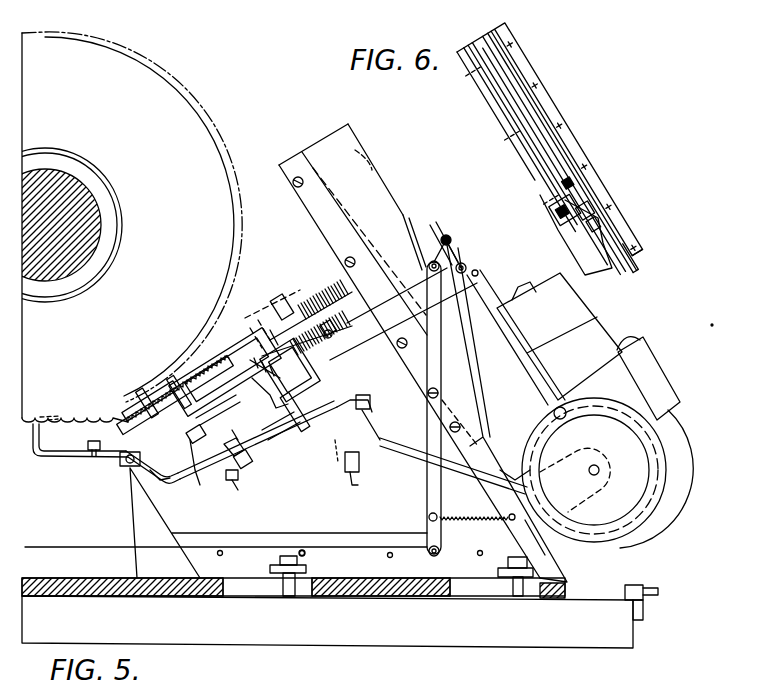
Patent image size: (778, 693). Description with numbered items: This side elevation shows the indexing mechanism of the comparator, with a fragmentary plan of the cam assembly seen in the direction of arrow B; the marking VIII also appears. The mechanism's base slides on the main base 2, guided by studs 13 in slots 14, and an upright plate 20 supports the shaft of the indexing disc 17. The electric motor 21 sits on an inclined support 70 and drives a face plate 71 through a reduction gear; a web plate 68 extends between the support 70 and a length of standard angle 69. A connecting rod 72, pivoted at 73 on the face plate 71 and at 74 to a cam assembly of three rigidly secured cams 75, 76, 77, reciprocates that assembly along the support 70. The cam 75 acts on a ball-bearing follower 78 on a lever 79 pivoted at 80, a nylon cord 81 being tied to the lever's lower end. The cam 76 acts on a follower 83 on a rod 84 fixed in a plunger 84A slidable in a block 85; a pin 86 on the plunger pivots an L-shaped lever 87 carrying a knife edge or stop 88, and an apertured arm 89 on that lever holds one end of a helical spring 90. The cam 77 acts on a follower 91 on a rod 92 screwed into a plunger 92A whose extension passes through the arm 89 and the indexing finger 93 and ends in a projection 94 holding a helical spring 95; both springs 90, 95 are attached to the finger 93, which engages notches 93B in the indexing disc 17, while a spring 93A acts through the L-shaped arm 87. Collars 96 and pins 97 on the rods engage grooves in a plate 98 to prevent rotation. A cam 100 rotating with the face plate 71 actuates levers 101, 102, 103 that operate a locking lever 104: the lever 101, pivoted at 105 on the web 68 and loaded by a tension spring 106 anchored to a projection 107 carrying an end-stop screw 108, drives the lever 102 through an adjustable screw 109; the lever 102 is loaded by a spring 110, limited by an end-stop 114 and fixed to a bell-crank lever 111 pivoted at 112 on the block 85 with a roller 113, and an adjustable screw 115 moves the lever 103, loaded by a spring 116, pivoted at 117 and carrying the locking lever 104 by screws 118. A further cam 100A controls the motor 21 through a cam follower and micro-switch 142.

In FIG. 5, the indexing disc 17 is at (148, 66).
In FIG. 5, the main base 2 is at (370, 648).
In FIG. 5, the studs 13 is at (300, 560).
In FIG. 5, the slots 14 is at (245, 598).
In FIG. 5, the upright plate 20 is at (48, 511).
In FIG. 5, the electric motor 21 is at (572, 312).
In FIG. 5, the web plate 68 is at (288, 523).
In FIG. 5, the length of standard angle 69 is at (448, 564).
In FIG. 5, the inclined support 70 is at (292, 170).
In FIG. 6, the inclined support 70 is at (525, 65).
In FIG. 5, the face plate 71 is at (610, 535).
In FIG. 5, the connecting rod 72 is at (508, 325).
In FIG. 6, the connecting rod 72 is at (620, 236).
In FIG. 5, the pivot 73 is at (566, 410).
In FIG. 5, the pivot 74 is at (524, 284).
In FIG. 5, the cam 75 is at (362, 165).
In FIG. 6, the cam 75 is at (505, 125).
In FIG. 5, the cam 76 is at (416, 226).
In FIG. 6, the cam 76 is at (530, 96).
In FIG. 5, the cam 77 is at (434, 232).
In FIG. 6, the cam 77 is at (545, 108).
In FIG. 5, the cam follower 78 is at (428, 262).
In FIG. 6, the cam follower 78 is at (540, 182).
In FIG. 5, the lever 79 is at (560, 400).
In FIG. 6, the lever 79 is at (520, 270).
In FIG. 5, the pivot 80 is at (446, 430).
In FIG. 5, the cord 81 is at (45, 547).
In FIG. 5, the cam follower 83 is at (463, 263).
In FIG. 6, the cam follower 83 is at (596, 180).
In FIG. 5, the rod 84 is at (352, 322).
In FIG. 5, the plunger 84A is at (312, 374).
In FIG. 5, the block 85 is at (272, 328).
In FIG. 5, the pin 86 is at (226, 358).
In FIG. 5, the L-shaped lever 87 is at (244, 452).
In FIG. 5, the knife edge or stop 88 is at (203, 486).
In FIG. 5, the apertured arm 89 is at (176, 378).
In FIG. 5, the helical spring 90 is at (148, 386).
In FIG. 5, the cam follower 91 is at (450, 236).
In FIG. 6, the cam follower 91 is at (578, 152).
In FIG. 5, the rod 92 is at (334, 300).
In FIG. 5, the plunger 92A is at (275, 300).
In FIG. 5, the indexing finger 93 is at (130, 393).
In FIG. 5, the spring 93A is at (165, 482).
In FIG. 5, the notches 93B is at (150, 380).
In FIG. 5, the projection 94 is at (120, 460).
In FIG. 5, the helical spring 95 is at (95, 402).
In FIG. 5, the collars 96 is at (298, 300).
In FIG. 5, the pins 97 is at (336, 342).
In FIG. 5, the plate 98 is at (285, 305).
In FIG. 5, the cam 100 is at (594, 525).
In FIG. 5, the cam 100A is at (640, 515).
In FIG. 5, the lever 101 is at (460, 470).
In FIG. 5, the lever 102 is at (295, 430).
In FIG. 5, the lever 103 is at (132, 480).
In FIG. 5, the locking lever 104 is at (36, 452).
In FIG. 5, the pivot 105 is at (448, 447).
In FIG. 5, the tension spring 106 is at (362, 464).
In FIG. 5, the projection 107 is at (358, 482).
In FIG. 5, the adjustable end-stop screw 108 is at (368, 412).
In FIG. 5, the adjustable screw 109 is at (364, 394).
In FIG. 5, the spring 110 is at (337, 464).
In FIG. 5, the bell-crank lever 111 is at (292, 425).
In FIG. 5, the pivot 112 is at (247, 327).
In FIG. 5, the roller 113 is at (232, 412).
In FIG. 5, the end-stop 114 is at (282, 445).
In FIG. 5, the adjustable screw 115 is at (250, 470).
In FIG. 5, the spring 116 is at (236, 492).
In FIG. 5, the pivot 117 is at (128, 468).
In FIG. 5, the screws 118 is at (93, 441).
In FIG. 5, the cam follower and micro-switch 142 is at (637, 360).
In FIG. 5, the arrow B is at (403, 164).
In FIG. 5, the section line VIII is at (260, 388).
In FIG. 6, the section line VIII is at (498, 222).